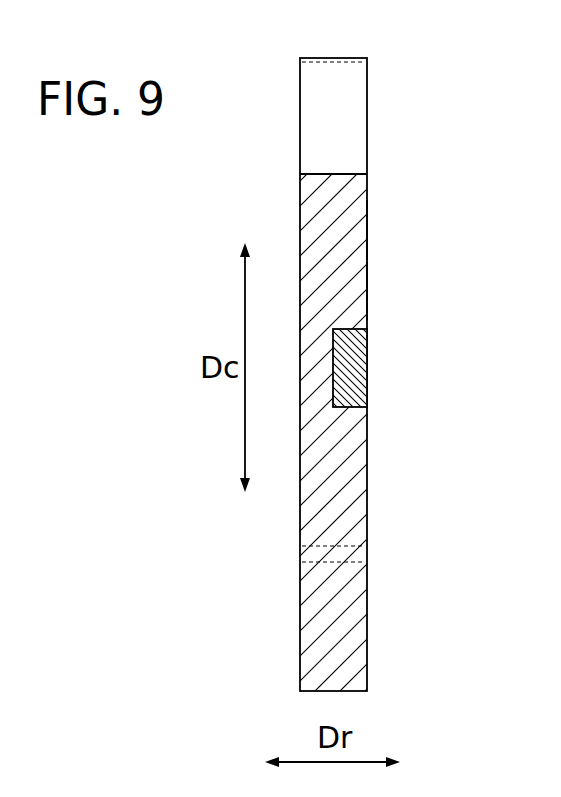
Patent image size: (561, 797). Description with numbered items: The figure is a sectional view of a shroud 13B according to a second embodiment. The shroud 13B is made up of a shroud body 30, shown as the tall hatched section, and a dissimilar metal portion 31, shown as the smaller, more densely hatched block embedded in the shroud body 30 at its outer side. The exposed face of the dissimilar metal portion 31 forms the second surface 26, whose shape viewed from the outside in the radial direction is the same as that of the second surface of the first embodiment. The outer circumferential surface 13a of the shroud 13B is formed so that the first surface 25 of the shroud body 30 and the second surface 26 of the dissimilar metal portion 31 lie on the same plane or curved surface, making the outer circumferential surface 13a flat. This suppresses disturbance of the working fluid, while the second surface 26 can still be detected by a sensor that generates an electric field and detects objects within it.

The shroud 13B is at (396, 77).
The shroud body 30 is at (344, 203).
The outer circumferential surface 13a is at (368, 237).
The first surface 25 is at (368, 283).
The second surface 26 is at (368, 350).
The dissimilar metal portion 31 is at (356, 382).